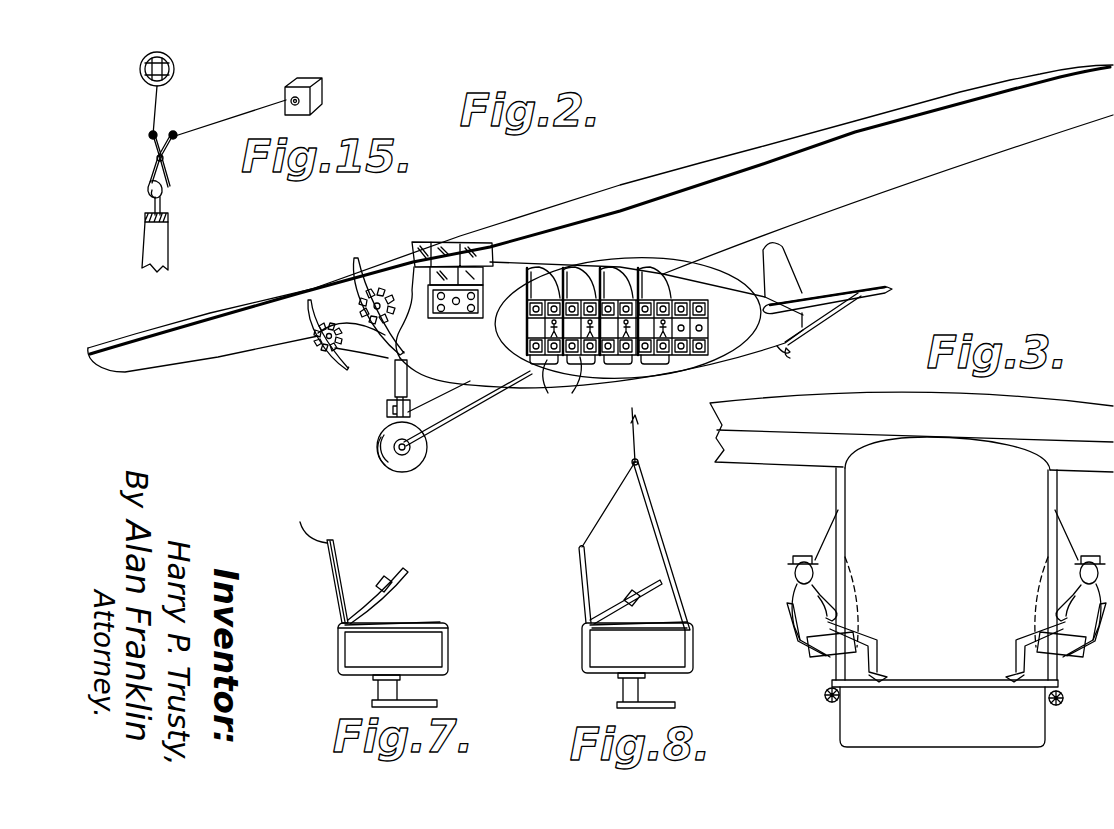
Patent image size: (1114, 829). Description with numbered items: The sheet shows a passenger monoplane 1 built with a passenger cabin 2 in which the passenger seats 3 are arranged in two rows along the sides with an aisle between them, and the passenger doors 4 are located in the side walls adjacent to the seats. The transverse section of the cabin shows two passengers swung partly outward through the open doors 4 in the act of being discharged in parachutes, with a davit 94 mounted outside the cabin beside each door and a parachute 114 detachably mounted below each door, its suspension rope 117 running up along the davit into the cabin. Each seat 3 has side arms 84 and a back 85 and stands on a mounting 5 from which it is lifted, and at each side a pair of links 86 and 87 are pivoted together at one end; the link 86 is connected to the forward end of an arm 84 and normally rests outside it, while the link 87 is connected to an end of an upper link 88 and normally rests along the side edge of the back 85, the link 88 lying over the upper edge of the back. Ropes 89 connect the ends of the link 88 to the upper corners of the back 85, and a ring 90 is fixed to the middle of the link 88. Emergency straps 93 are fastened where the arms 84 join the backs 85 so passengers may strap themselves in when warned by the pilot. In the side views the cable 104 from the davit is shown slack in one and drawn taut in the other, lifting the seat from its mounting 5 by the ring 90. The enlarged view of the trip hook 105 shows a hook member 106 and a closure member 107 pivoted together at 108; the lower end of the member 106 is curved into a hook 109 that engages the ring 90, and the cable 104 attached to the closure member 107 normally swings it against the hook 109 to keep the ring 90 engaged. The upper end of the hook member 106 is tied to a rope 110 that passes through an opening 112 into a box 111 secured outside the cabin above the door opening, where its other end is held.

In FIG. 2, the passenger monoplane 1 is at (496, 209).
In FIG. 3, the passenger monoplane 1 is at (896, 391).
In FIG. 2, the passenger cabin 2 is at (644, 383).
In FIG. 3, the passenger cabin 2 is at (945, 592).
In FIG. 3, the passenger seat 3 is at (944, 619).
In FIG. 7, the passenger seat 3 is at (360, 611).
In FIG. 8, the passenger seat 3 is at (628, 558).
In FIG. 2, the passenger door 4 is at (525, 350).
In FIG. 7, the seat pedestal 5 is at (404, 691).
In FIG. 8, the seat pedestal 5 is at (646, 690).
In FIG. 7, the side arm 84 is at (403, 632).
In FIG. 8, the side arm 84 is at (652, 630).
In FIG. 7, the seat back 85 is at (332, 577).
In FIG. 8, the seat back 85 is at (583, 580).
In FIG. 7, the link 86 is at (417, 630).
In FIG. 8, the link 86 is at (678, 585).
In FIG. 7, the link 87 is at (335, 605).
In FIG. 8, the link 87 is at (660, 520).
In FIG. 15, the upper link 88 is at (160, 243).
In FIG. 7, the upper link 88 is at (330, 543).
In FIG. 8, the rope 89 is at (606, 510).
In FIG. 15, the ring 90 is at (163, 203).
In FIG. 7, the ring 90 is at (343, 528).
In FIG. 8, the ring 90 is at (632, 463).
In FIG. 7, the emergency strap 93 is at (407, 570).
In FIG. 8, the emergency strap 93 is at (592, 613).
In FIG. 2, the davit 94 is at (648, 275).
In FIG. 3, the davit 94 is at (951, 574).
In FIG. 15, the cable 104 is at (155, 108).
In FIG. 7, the cable 104 is at (299, 548).
In FIG. 8, the cable 104 is at (638, 437).
In FIG. 15, the trip hook 105 is at (156, 158).
In FIG. 8, the trip hook 105 is at (640, 461).
In FIG. 15, the hook member 106 is at (148, 181).
In FIG. 15, the closure member 107 is at (168, 176).
In FIG. 15, the pivot 108 is at (166, 157).
In FIG. 15, the hook 109 is at (148, 185).
In FIG. 15, the rope 110 is at (223, 120).
In FIG. 15, the box 111 is at (320, 86).
In FIG. 15, the opening 112 is at (291, 100).
In FIG. 2, the parachute 114 is at (560, 386).
In FIG. 3, the parachute 114 is at (826, 701).
In FIG. 8, the suspension rope 117 is at (630, 437).